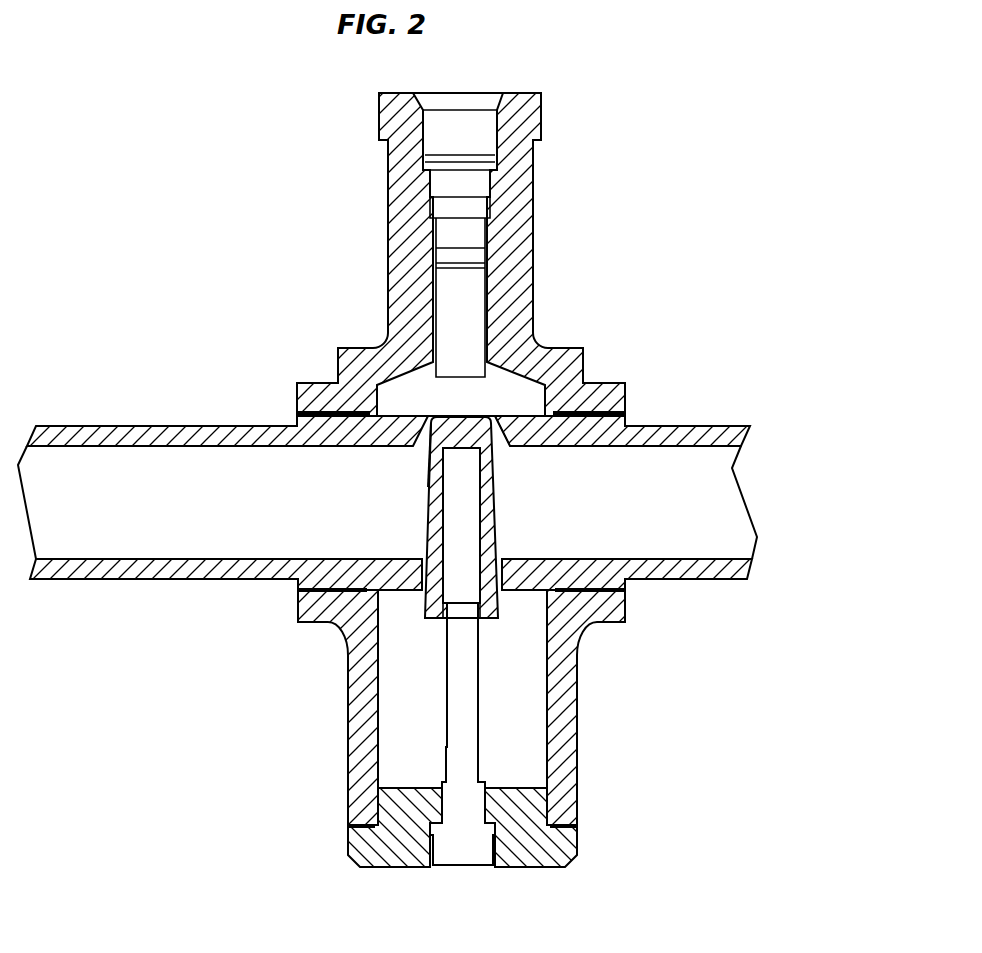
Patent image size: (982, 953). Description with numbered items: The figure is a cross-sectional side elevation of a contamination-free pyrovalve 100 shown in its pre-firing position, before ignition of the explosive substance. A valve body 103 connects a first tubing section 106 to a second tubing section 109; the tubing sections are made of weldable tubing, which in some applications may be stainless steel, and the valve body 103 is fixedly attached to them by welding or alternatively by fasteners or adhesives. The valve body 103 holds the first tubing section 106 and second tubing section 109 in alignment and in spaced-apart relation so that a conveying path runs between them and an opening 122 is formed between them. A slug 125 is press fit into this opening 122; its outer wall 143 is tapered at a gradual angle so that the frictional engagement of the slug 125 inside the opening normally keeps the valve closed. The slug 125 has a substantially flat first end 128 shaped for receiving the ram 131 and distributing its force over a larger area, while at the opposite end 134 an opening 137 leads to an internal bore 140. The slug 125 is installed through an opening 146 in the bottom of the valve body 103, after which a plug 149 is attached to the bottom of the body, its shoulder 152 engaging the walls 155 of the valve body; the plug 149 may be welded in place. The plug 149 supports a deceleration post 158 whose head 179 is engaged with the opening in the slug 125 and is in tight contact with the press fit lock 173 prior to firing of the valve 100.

The contamination-free pyrovalve 100 is at (245, 620).
The valve body 103 is at (563, 727).
The first tubing section 106 is at (118, 429).
The second tubing section 109 is at (713, 569).
The opening 122 is at (500, 555).
The slug 125 is at (428, 487).
The first end 128 is at (480, 415).
The ram 131 is at (445, 333).
The opposite end 134 is at (428, 630).
The opening 137 is at (442, 634).
The internal bore 140 is at (482, 520).
The outer wall 143 is at (425, 533).
The opening 146 is at (386, 782).
The plug 149 is at (382, 866).
The shoulder 152 is at (352, 830).
The walls 155 is at (360, 747).
The deceleration post 158 is at (477, 723).
The press fit lock 173 is at (463, 613).
The head 179 is at (477, 618).